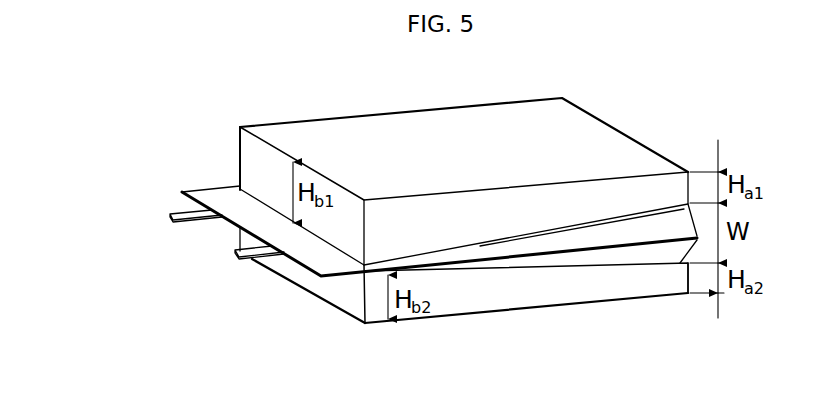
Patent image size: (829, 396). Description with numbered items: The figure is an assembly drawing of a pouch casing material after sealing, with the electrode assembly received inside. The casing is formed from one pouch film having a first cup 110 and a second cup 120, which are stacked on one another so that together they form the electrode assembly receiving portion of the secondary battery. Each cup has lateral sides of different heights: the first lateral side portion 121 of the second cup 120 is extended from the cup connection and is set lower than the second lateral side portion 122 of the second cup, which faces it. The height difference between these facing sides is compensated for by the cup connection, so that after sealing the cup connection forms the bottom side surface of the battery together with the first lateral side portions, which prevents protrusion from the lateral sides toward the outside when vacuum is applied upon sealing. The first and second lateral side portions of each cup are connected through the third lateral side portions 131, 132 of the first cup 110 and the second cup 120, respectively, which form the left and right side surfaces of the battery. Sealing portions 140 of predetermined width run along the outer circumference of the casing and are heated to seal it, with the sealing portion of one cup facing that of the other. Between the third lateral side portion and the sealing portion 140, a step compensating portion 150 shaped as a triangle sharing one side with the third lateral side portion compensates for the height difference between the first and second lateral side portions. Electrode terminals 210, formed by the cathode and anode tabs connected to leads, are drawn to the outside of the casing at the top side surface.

The first cup 110 is at (388, 133).
The first lateral side portion of the second cup 121 is at (248, 157).
The third lateral side portion of the first cup 131 is at (640, 193).
The sealing portion 140 is at (313, 256).
The step compensating portion 150 is at (650, 227).
The second cup 120 is at (512, 312).
The second lateral side portion of the second cup 122 is at (350, 293).
The third lateral side portion of the second cup 132 is at (578, 285).
The electrode terminal 210 is at (170, 217).